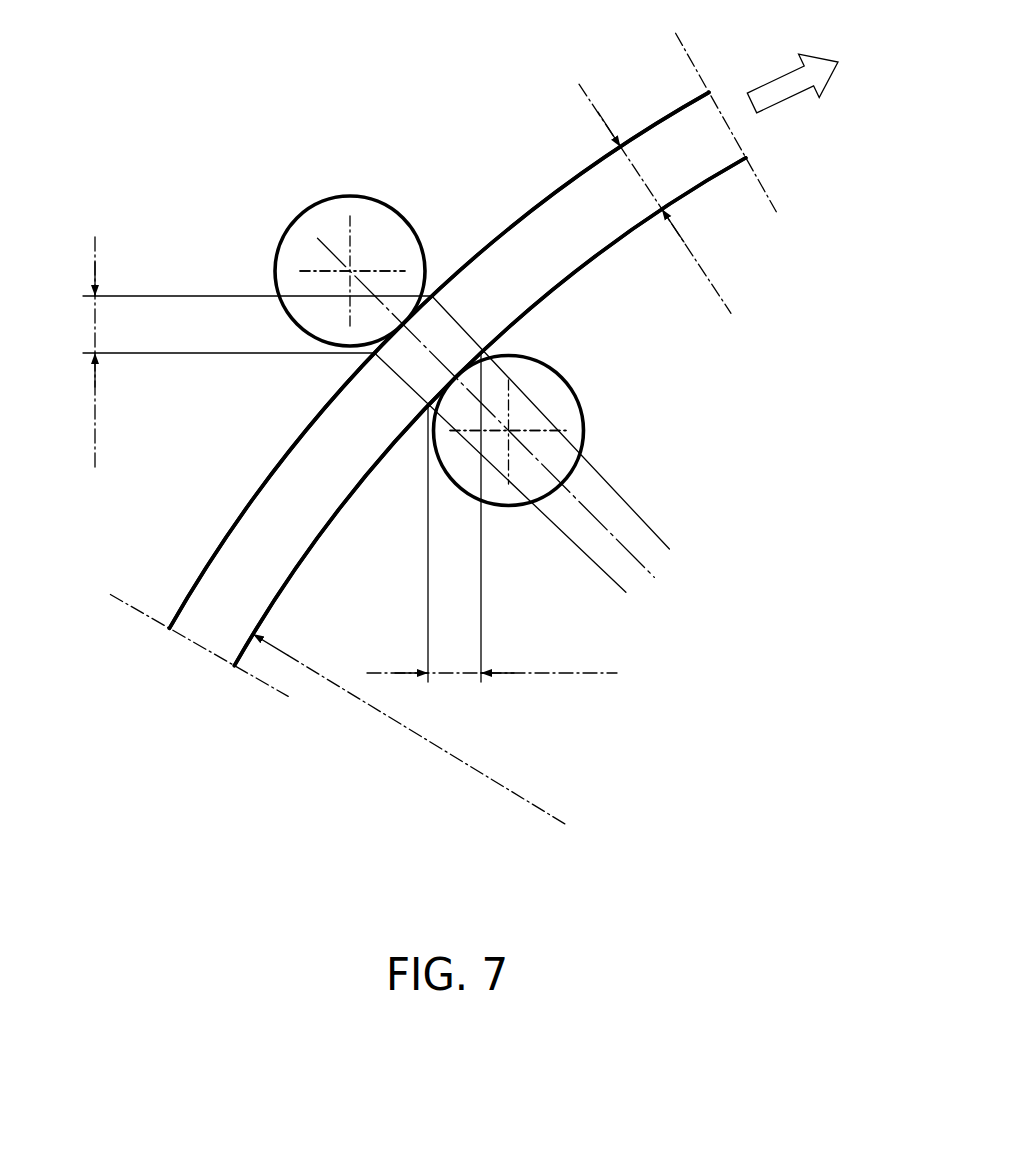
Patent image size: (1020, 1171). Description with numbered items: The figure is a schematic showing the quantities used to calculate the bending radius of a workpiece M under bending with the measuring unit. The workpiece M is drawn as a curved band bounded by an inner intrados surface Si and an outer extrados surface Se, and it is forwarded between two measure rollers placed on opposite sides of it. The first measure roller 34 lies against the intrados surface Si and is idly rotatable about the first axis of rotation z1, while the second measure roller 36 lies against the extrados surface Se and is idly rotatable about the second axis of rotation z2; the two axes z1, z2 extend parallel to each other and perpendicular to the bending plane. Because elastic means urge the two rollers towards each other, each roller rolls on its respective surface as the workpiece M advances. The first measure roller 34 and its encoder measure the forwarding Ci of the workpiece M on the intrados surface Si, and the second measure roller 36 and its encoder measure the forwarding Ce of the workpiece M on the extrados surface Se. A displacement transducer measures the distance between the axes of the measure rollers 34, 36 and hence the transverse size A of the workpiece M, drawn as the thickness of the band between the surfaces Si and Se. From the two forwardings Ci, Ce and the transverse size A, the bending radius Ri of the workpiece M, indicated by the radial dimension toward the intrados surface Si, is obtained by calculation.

The first measure roller 34 is at (563, 378).
The second measure roller 36 is at (327, 198).
The workpiece M is at (491, 238).
The extrados surface Se is at (658, 120).
The intrados surface Si is at (605, 250).
The transverse size A is at (657, 198).
The forwarding on the extrados surface Ce is at (257, 352).
The forwarding on the intrados surface Ci is at (492, 517).
The bending radius Ri is at (409, 729).
The first axis of rotation z1 is at (510, 443).
The second axis of rotation z2 is at (366, 258).